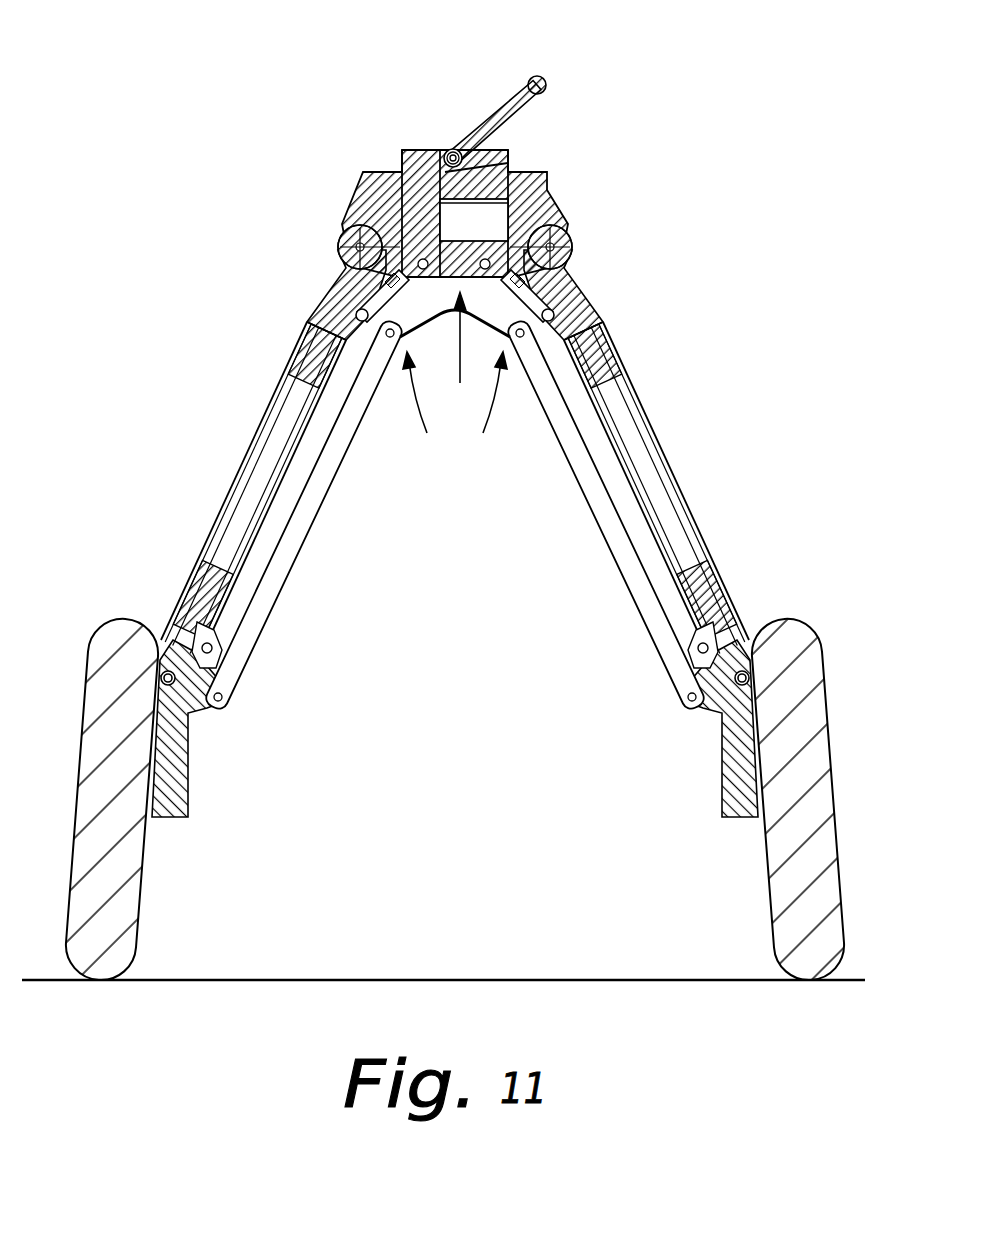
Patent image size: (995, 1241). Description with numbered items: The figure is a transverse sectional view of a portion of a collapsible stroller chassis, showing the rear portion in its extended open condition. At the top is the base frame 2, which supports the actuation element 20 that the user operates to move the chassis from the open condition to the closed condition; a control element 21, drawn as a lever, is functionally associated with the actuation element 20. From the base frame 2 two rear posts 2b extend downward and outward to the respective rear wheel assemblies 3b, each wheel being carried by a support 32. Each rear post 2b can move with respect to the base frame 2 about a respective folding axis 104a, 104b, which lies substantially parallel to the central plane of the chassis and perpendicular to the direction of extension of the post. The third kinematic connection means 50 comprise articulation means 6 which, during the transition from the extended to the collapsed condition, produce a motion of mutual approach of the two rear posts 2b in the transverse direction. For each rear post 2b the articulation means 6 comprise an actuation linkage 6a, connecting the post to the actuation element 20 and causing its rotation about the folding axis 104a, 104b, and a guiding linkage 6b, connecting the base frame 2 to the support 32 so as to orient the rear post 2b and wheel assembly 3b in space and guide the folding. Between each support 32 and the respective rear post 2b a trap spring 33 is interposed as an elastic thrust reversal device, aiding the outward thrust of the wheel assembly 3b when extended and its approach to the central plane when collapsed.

The base frame 2 is at (535, 203).
The rear post 2b is at (247, 470).
The rear wheel assembly 3b is at (108, 878).
The articulation means 6 is at (455, 409).
The actuation linkage 6a is at (367, 299).
The guiding linkage 6b is at (295, 533).
The actuation element 20 is at (508, 165).
The control element 21 is at (537, 76).
The support 32 is at (180, 727).
The trap spring 33 is at (212, 655).
The third kinematic connection means 50 is at (453, 358).
The folding axis 104a is at (565, 242).
The folding axis 104b is at (352, 243).